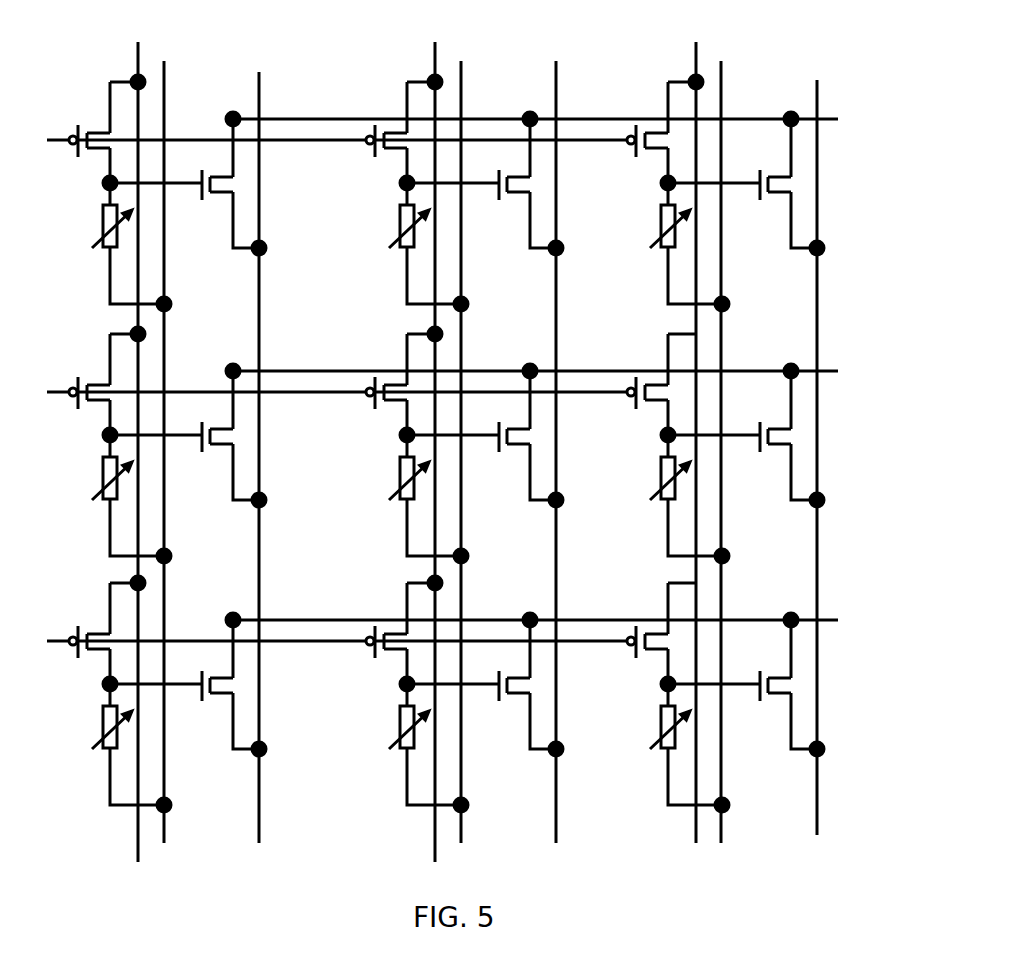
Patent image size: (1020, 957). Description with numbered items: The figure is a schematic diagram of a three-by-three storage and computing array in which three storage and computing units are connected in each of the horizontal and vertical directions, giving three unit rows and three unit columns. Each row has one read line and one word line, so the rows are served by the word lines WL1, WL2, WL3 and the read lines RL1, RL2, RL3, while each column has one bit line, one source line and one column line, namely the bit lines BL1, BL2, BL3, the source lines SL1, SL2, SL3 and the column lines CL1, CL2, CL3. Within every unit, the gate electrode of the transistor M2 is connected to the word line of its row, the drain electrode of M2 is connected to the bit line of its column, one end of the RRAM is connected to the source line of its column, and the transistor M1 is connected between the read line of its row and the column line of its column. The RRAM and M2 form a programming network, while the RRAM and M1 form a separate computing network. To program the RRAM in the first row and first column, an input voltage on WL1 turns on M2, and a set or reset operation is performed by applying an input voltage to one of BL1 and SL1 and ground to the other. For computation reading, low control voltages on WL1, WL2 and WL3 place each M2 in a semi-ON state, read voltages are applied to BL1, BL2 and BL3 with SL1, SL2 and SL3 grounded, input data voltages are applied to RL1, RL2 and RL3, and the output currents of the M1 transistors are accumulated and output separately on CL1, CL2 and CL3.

The bit line of the first column BL1 is at (136, 436).
The bit line of the second column BL2 is at (446, 436).
The bit line of the third column BL3 is at (710, 427).
The source line of the first column SL1 is at (190, 446).
The source line of the second column SL2 is at (490, 448).
The source line of the third column SL3 is at (745, 448).
The column line of the first column CL1 is at (287, 446).
The column line of the second column CL2 is at (584, 444).
The column line of the third column CL3 is at (844, 450).
The word line of the first row WL1 is at (324, 161).
The word line of the second row WL2 is at (324, 407).
The word line of the third row WL3 is at (324, 662).
The read line of the first row RL1 is at (564, 130).
The read line of the second row RL2 is at (564, 376).
The read line of the third row RL3 is at (565, 619).